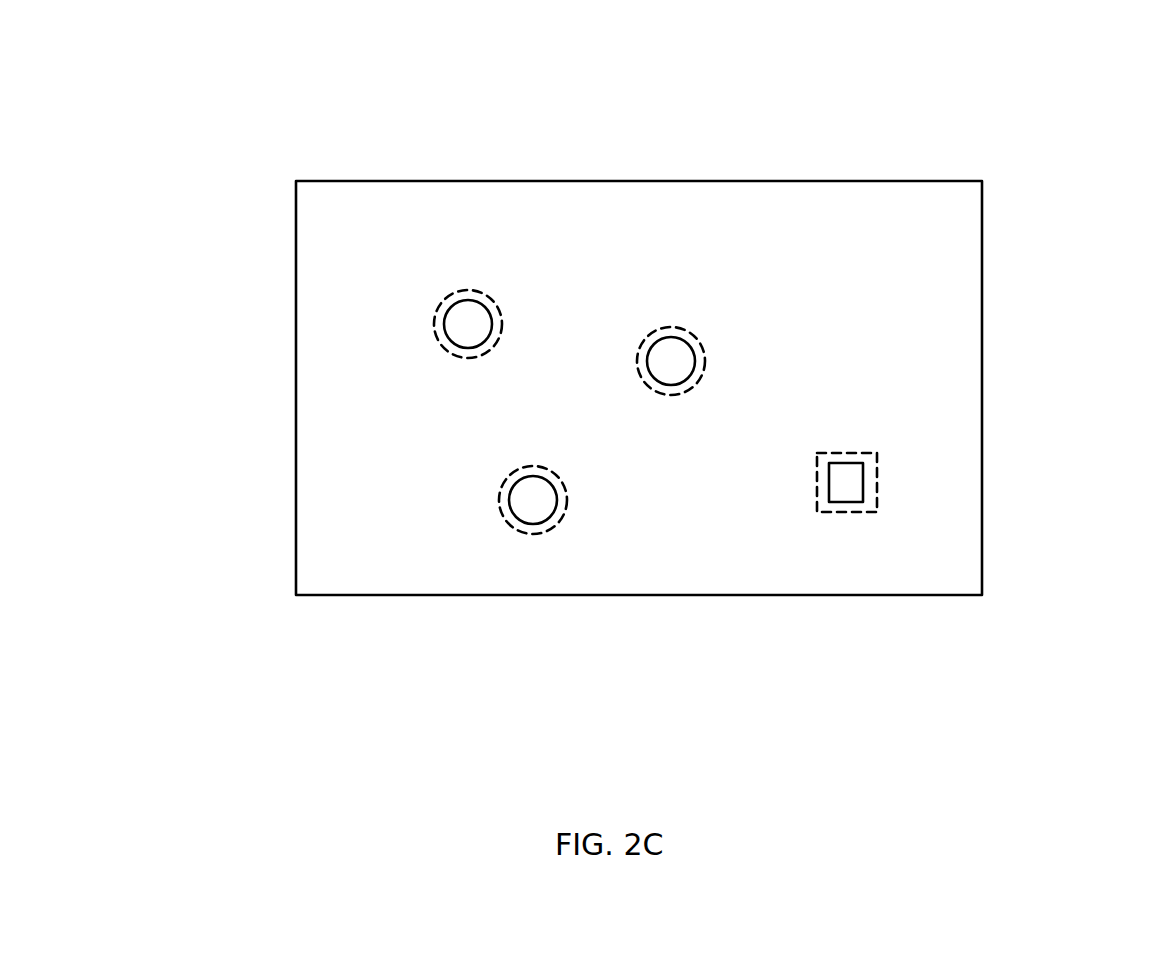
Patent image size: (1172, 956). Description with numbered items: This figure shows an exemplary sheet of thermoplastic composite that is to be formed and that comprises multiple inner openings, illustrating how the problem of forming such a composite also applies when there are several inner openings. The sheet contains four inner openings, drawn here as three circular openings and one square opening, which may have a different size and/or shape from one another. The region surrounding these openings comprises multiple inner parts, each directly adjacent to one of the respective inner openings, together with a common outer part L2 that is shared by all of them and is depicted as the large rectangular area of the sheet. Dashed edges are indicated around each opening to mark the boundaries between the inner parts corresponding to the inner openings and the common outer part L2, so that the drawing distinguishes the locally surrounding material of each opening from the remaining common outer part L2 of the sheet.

The common outer part L2 is at (935, 305).